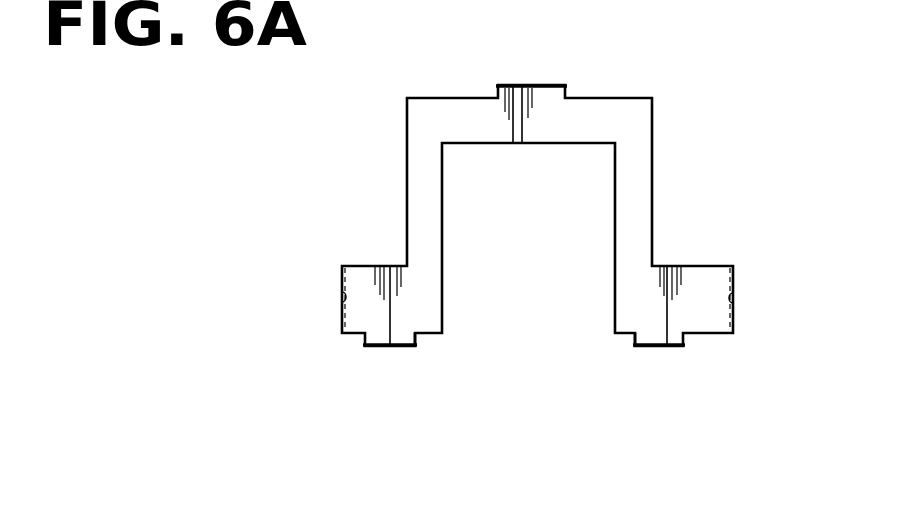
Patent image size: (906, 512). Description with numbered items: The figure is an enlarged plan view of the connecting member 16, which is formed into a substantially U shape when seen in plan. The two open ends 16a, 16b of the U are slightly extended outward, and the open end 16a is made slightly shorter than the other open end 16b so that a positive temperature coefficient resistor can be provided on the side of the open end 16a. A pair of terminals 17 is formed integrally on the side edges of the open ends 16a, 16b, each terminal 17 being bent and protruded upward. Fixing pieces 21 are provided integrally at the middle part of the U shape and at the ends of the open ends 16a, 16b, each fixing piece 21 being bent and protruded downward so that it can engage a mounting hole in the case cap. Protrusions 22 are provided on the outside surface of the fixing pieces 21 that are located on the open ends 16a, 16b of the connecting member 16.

The connecting member 16 is at (600, 140).
The open end 16a is at (370, 265).
The open end 16b is at (698, 267).
The terminal 17 is at (398, 338).
The fixing piece 21 is at (538, 82).
The protrusion 22 is at (342, 297).